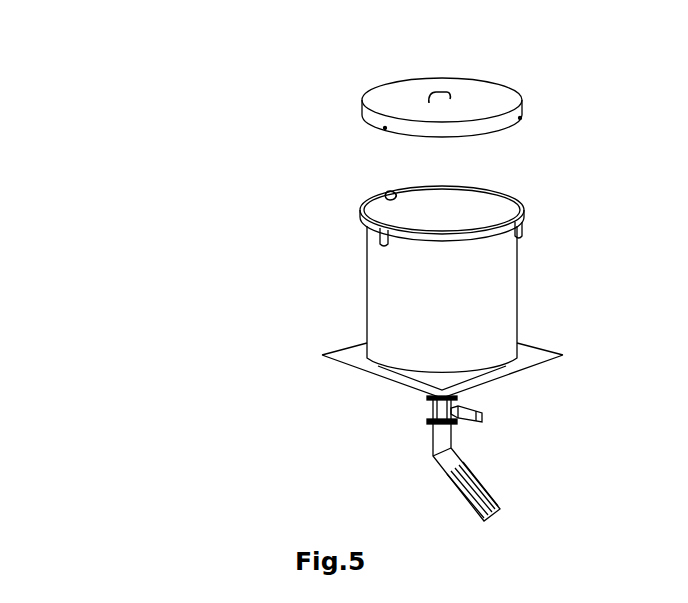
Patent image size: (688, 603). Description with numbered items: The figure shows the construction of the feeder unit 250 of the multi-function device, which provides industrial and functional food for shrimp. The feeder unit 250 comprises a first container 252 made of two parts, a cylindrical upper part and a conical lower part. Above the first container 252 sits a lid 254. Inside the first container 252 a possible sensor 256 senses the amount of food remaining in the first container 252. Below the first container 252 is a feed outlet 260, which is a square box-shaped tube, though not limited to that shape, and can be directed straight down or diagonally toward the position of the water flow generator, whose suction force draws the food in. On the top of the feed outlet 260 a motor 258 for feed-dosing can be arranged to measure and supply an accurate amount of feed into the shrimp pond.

The feeder unit 250 is at (248, 230).
The first container 252 is at (382, 308).
The lid 254 is at (368, 102).
The sensor 256 is at (388, 197).
The motor 258 is at (485, 418).
The feed outlet 260 is at (452, 478).